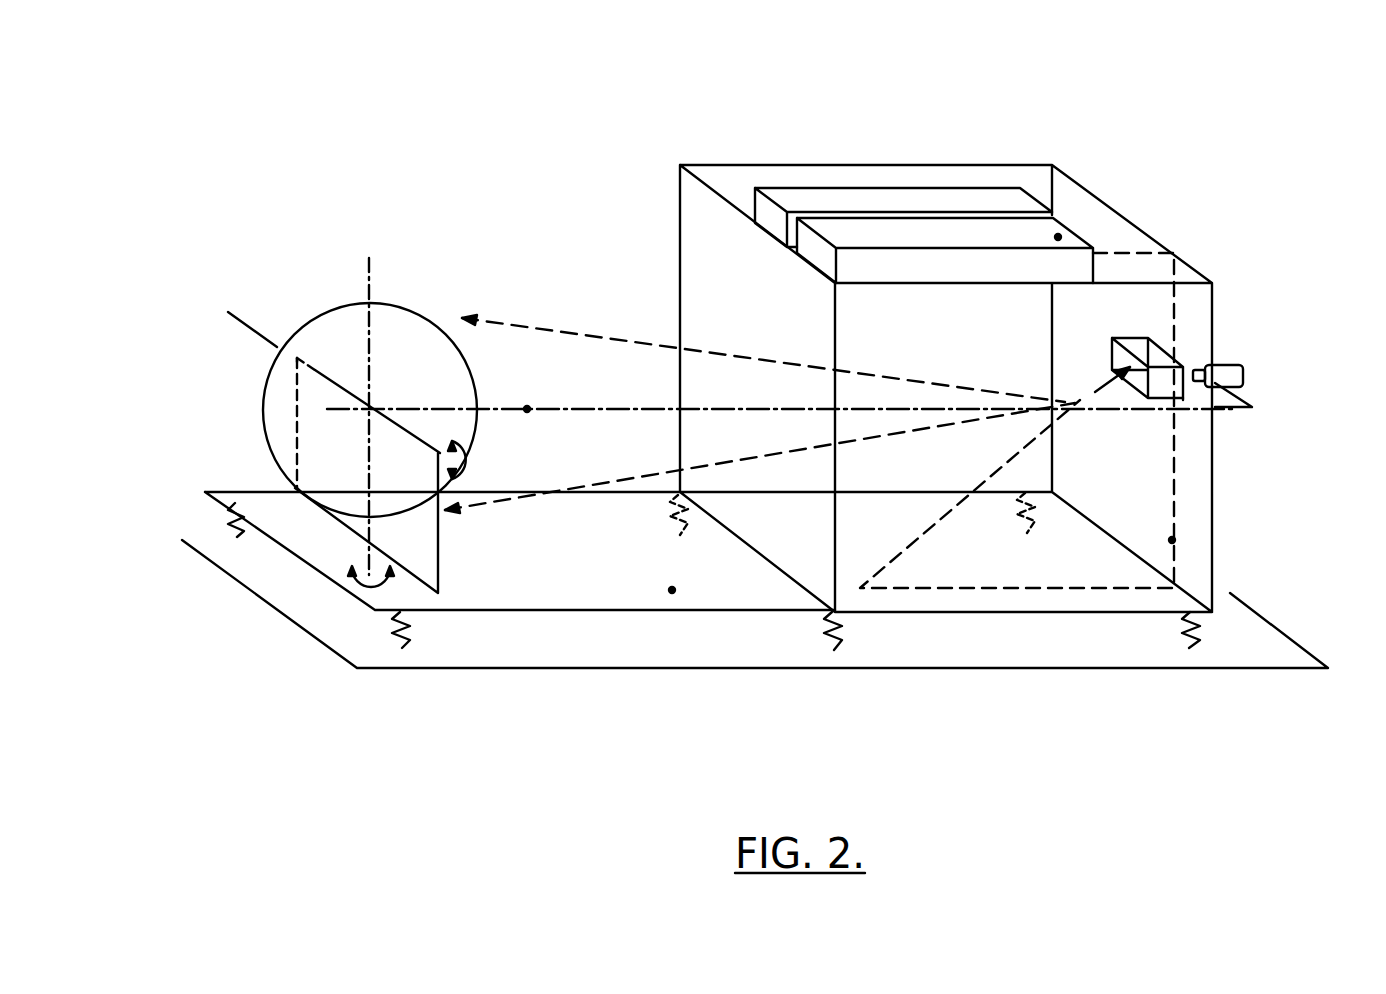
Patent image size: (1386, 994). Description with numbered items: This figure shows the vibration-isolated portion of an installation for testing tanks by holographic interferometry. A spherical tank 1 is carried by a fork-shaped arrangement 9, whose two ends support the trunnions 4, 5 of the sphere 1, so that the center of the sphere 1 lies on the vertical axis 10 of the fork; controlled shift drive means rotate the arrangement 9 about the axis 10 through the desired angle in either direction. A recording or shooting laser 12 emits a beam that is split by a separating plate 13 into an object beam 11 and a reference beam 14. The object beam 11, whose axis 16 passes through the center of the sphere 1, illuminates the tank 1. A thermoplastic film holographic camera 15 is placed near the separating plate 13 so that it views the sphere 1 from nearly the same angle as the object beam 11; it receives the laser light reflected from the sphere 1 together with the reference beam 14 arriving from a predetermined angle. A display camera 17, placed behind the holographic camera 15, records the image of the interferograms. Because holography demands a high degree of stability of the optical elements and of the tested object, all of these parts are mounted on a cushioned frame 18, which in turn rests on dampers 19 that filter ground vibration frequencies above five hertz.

The spherical tank 1 is at (320, 306).
The trunnion 4 is at (437, 453).
The trunnion 5 is at (293, 360).
The fork-shaped arrangement 9 is at (442, 570).
The vertical axis 10 is at (369, 258).
The object beam 11 is at (600, 335).
The laser 12 is at (1058, 237).
The separating plate 13 is at (1172, 410).
The reference beam 14 is at (993, 475).
The thermoplastic film holographic camera 15 is at (1148, 332).
The axis of the object beam 16 is at (527, 409).
The display camera 17 is at (1240, 360).
The cushioned frame 18 is at (672, 590).
The dampers 19 is at (232, 540).